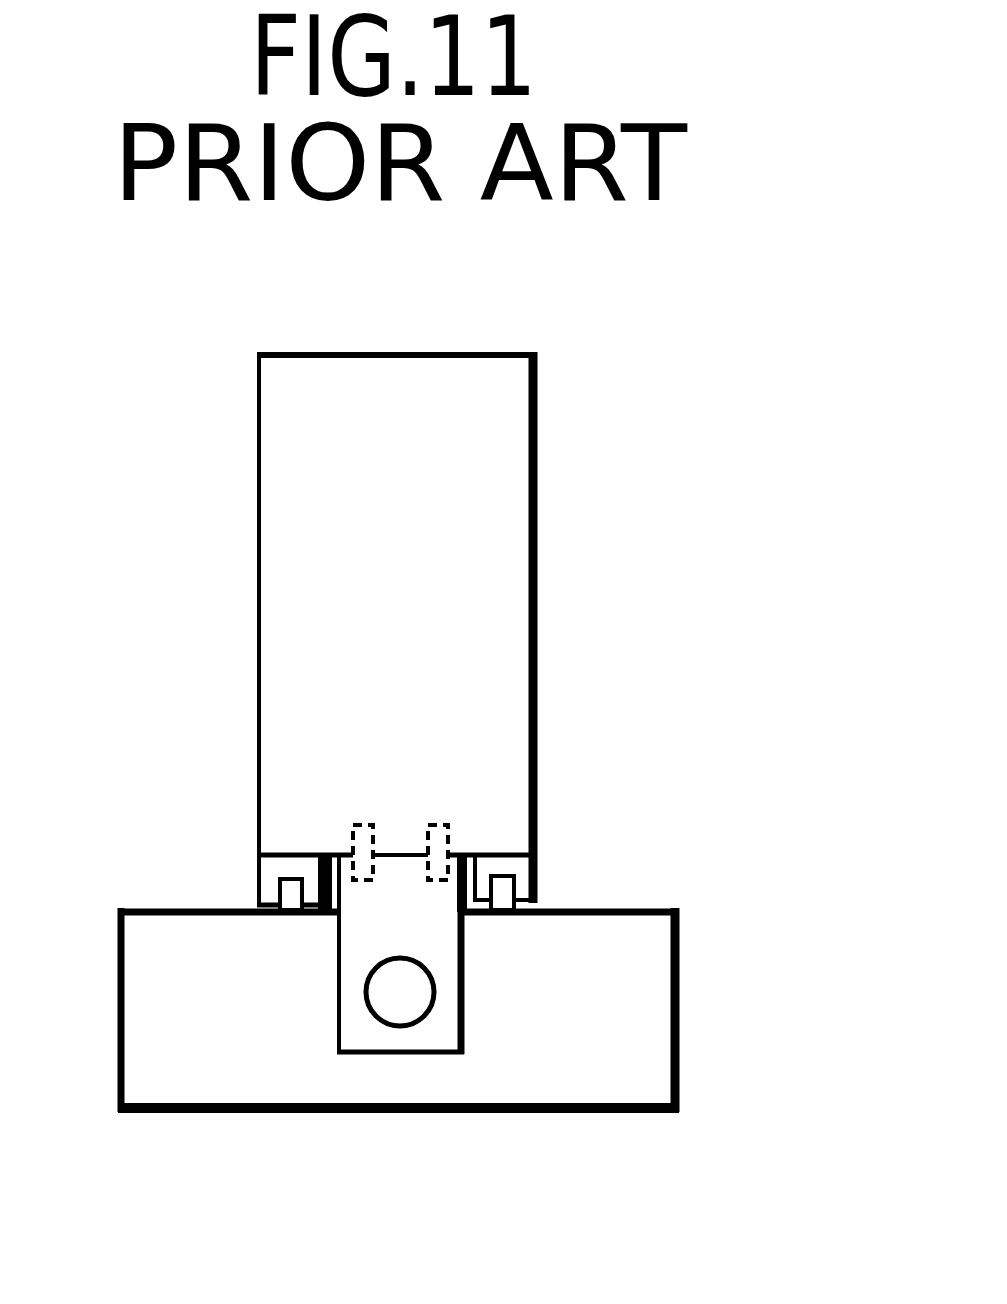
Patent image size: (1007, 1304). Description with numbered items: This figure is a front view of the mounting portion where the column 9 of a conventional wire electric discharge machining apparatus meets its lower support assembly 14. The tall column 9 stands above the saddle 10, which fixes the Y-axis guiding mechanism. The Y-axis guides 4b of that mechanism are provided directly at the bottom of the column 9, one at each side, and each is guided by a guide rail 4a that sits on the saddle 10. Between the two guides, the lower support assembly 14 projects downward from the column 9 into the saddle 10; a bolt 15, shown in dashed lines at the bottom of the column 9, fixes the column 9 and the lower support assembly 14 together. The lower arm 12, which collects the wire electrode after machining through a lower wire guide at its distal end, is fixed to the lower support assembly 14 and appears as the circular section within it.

The column 9 is at (536, 436).
The bolt 15 is at (448, 828).
The Y-axis guide 4b is at (257, 868).
The guide rail 4a is at (290, 916).
The lower support assembly 14 is at (336, 1033).
The lower arm 12 is at (434, 990).
The saddle 10 is at (680, 1075).